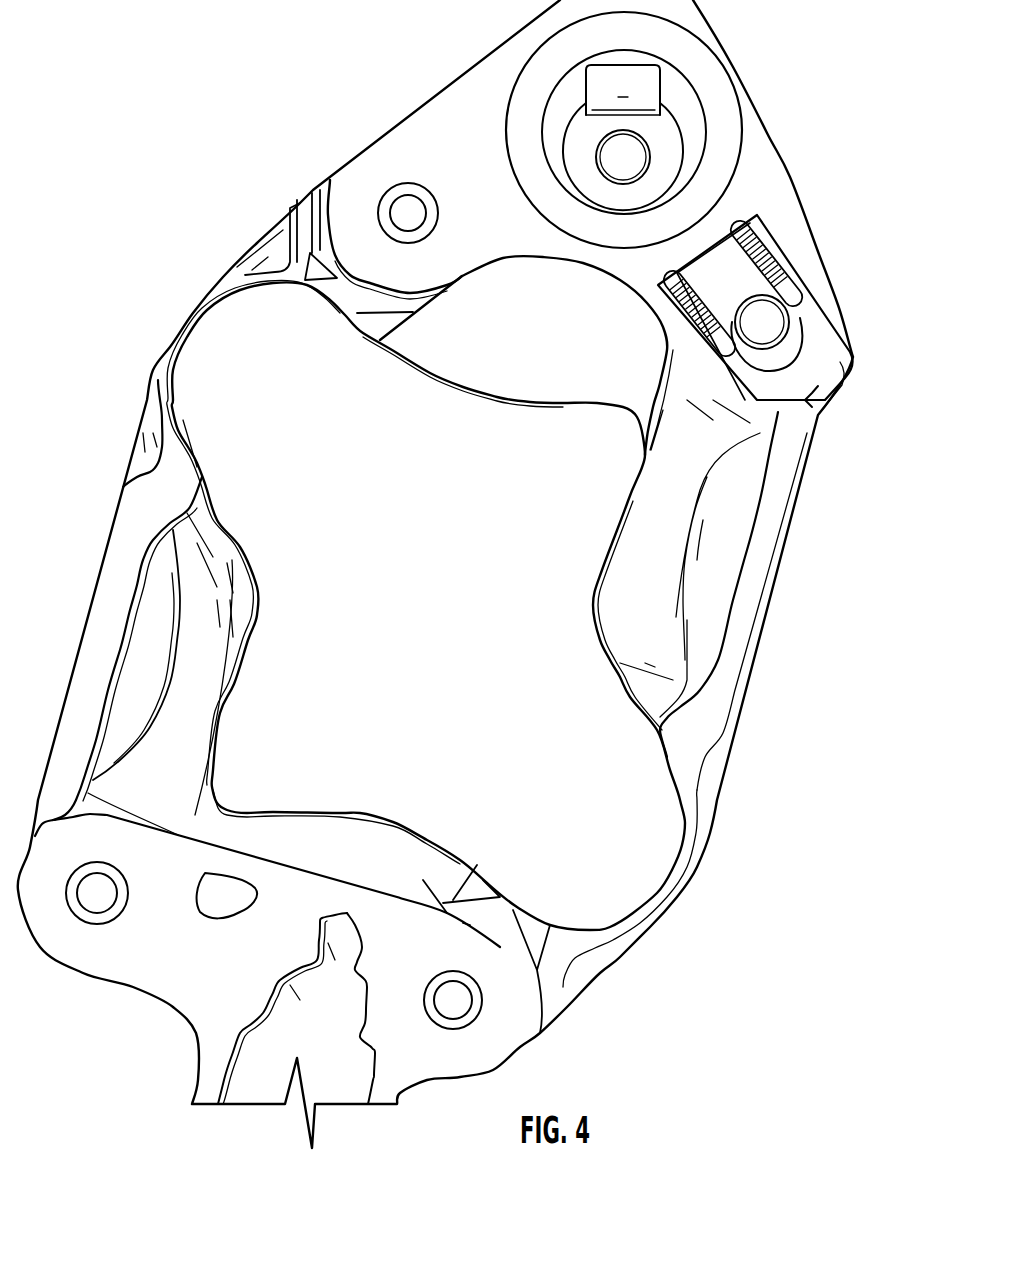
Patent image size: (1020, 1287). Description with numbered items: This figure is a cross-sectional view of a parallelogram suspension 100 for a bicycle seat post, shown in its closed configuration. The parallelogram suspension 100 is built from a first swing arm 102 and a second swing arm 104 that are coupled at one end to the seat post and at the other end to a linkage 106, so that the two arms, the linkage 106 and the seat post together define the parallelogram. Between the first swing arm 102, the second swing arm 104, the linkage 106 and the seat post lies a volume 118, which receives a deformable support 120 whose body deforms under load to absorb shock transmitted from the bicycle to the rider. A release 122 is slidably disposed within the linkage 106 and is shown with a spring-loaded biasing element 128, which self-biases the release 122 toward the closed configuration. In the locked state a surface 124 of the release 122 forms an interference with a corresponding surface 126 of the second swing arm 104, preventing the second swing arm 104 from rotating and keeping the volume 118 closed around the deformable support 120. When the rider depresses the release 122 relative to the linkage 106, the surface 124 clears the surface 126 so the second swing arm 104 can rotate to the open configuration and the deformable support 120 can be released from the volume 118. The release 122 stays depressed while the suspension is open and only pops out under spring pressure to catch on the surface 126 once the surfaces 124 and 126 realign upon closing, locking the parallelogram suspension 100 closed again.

The parallelogram suspension 100 is at (176, 201).
The first swing arm 102 is at (95, 635).
The second swing arm 104 is at (720, 722).
The linkage 106 is at (783, 177).
The volume 118 is at (500, 947).
The deformable support 120 is at (655, 842).
The release 122 is at (843, 367).
The surface 124 is at (805, 408).
The surface 126 is at (812, 384).
The spring-loaded biasing element 128 is at (770, 263).